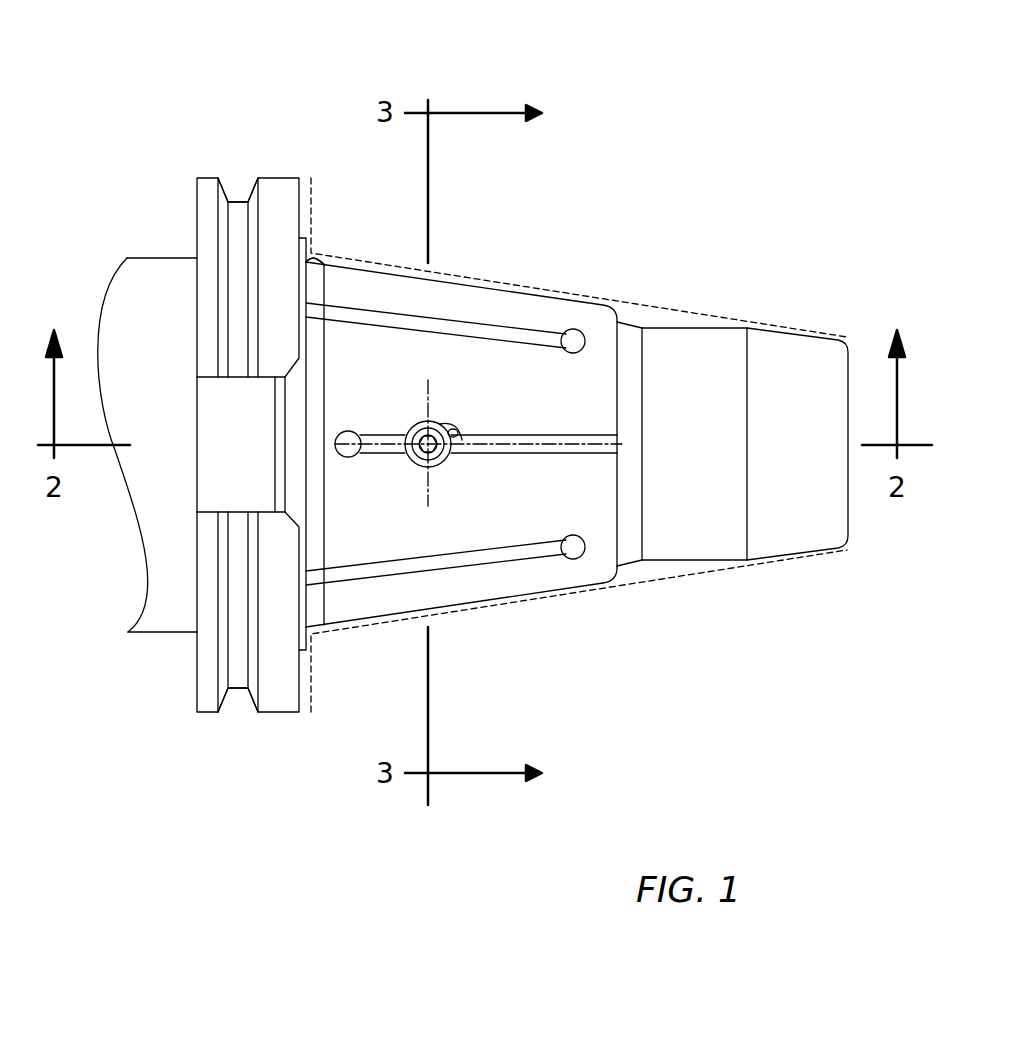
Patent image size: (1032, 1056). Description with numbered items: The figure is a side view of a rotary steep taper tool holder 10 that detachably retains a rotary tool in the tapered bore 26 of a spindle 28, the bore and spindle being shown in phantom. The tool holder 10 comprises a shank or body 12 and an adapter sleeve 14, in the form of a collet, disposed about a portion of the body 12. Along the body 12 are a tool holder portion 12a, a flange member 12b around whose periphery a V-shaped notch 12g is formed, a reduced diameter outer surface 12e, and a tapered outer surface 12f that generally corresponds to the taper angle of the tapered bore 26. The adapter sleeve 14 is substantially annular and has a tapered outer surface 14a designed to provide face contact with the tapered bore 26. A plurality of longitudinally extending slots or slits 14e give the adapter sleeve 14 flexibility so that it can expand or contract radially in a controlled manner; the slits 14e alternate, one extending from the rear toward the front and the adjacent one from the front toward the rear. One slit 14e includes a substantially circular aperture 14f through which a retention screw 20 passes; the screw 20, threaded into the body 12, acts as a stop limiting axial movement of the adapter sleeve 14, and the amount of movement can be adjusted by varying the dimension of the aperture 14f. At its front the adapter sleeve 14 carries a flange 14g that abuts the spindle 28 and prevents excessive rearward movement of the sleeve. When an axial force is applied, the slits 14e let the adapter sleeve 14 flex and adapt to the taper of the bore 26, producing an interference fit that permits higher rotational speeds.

The rotary tapered tool holder 10 is at (698, 94).
The shank or body 12 is at (767, 302).
The tool holder portion 12a is at (132, 258).
The flange member 12b is at (272, 178).
The reduced diameter outer surface 12e is at (660, 327).
The tapered outer surface 12f is at (800, 331).
The V-shaped notch 12g is at (233, 200).
The adapter sleeve 14 is at (509, 266).
The tapered outer surface 14a is at (440, 290).
The slots or slits 14e is at (505, 330).
The substantially circular aperture 14f is at (452, 426).
The flange 14g is at (325, 256).
The retention pin or screw 20 is at (410, 428).
The tapered bore 26 is at (653, 578).
The spindle 28 is at (580, 634).